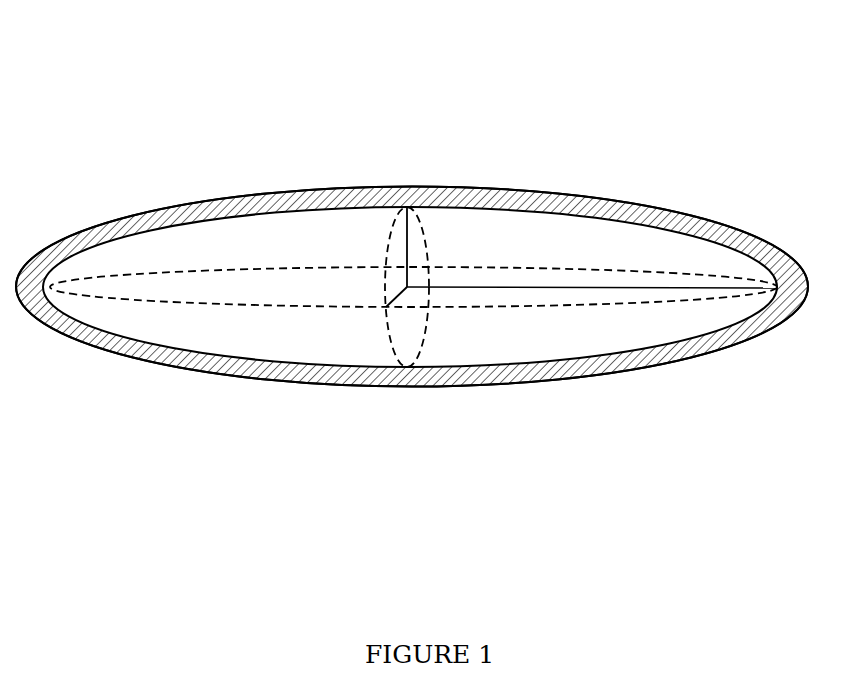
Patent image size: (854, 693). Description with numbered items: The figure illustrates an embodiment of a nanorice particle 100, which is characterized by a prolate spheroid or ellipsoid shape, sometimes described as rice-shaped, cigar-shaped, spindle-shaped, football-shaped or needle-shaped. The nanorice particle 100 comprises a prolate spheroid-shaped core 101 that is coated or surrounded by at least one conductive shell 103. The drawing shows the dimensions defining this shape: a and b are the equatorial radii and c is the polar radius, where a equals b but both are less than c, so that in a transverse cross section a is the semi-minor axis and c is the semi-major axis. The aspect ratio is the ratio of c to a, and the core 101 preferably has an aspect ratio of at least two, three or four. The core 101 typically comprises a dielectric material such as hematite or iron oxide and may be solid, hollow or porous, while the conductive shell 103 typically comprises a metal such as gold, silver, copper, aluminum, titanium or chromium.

The nanorice particle 100 is at (321, 110).
The core 101 is at (511, 190).
The conductive shell 103 is at (637, 203).